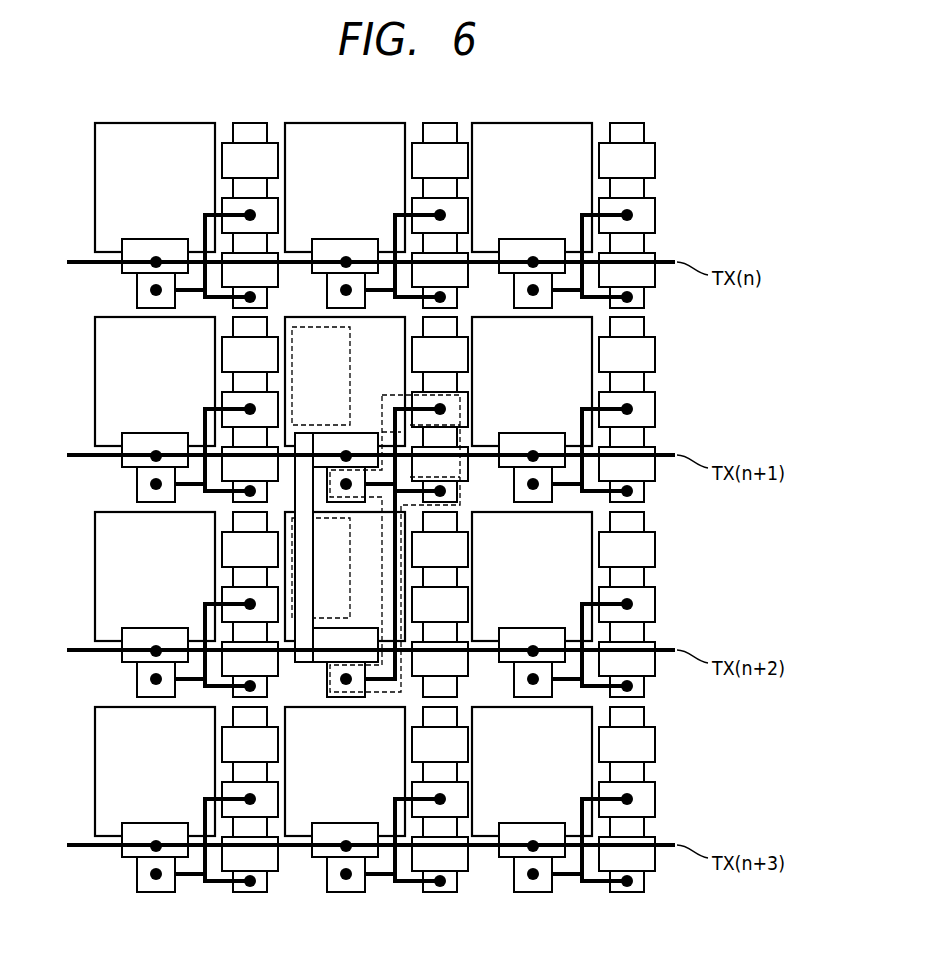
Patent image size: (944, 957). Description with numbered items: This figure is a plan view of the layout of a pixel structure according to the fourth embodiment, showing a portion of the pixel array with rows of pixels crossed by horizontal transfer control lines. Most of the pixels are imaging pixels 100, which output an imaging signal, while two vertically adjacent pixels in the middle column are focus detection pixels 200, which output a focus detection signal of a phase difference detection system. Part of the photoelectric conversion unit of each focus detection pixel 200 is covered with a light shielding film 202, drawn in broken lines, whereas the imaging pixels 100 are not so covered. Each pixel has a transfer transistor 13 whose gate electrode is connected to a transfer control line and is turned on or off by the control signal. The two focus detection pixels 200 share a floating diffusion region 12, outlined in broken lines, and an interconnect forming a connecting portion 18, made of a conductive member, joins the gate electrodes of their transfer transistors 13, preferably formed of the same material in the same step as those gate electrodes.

The imaging pixel 100 is at (552, 783).
The focus detection pixel 200 is at (365, 588).
The light shielding film 202 is at (292, 332).
The floating diffusion region 12 is at (462, 490).
The transfer transistor 13 is at (220, 434).
The connecting portion 18 is at (303, 582).